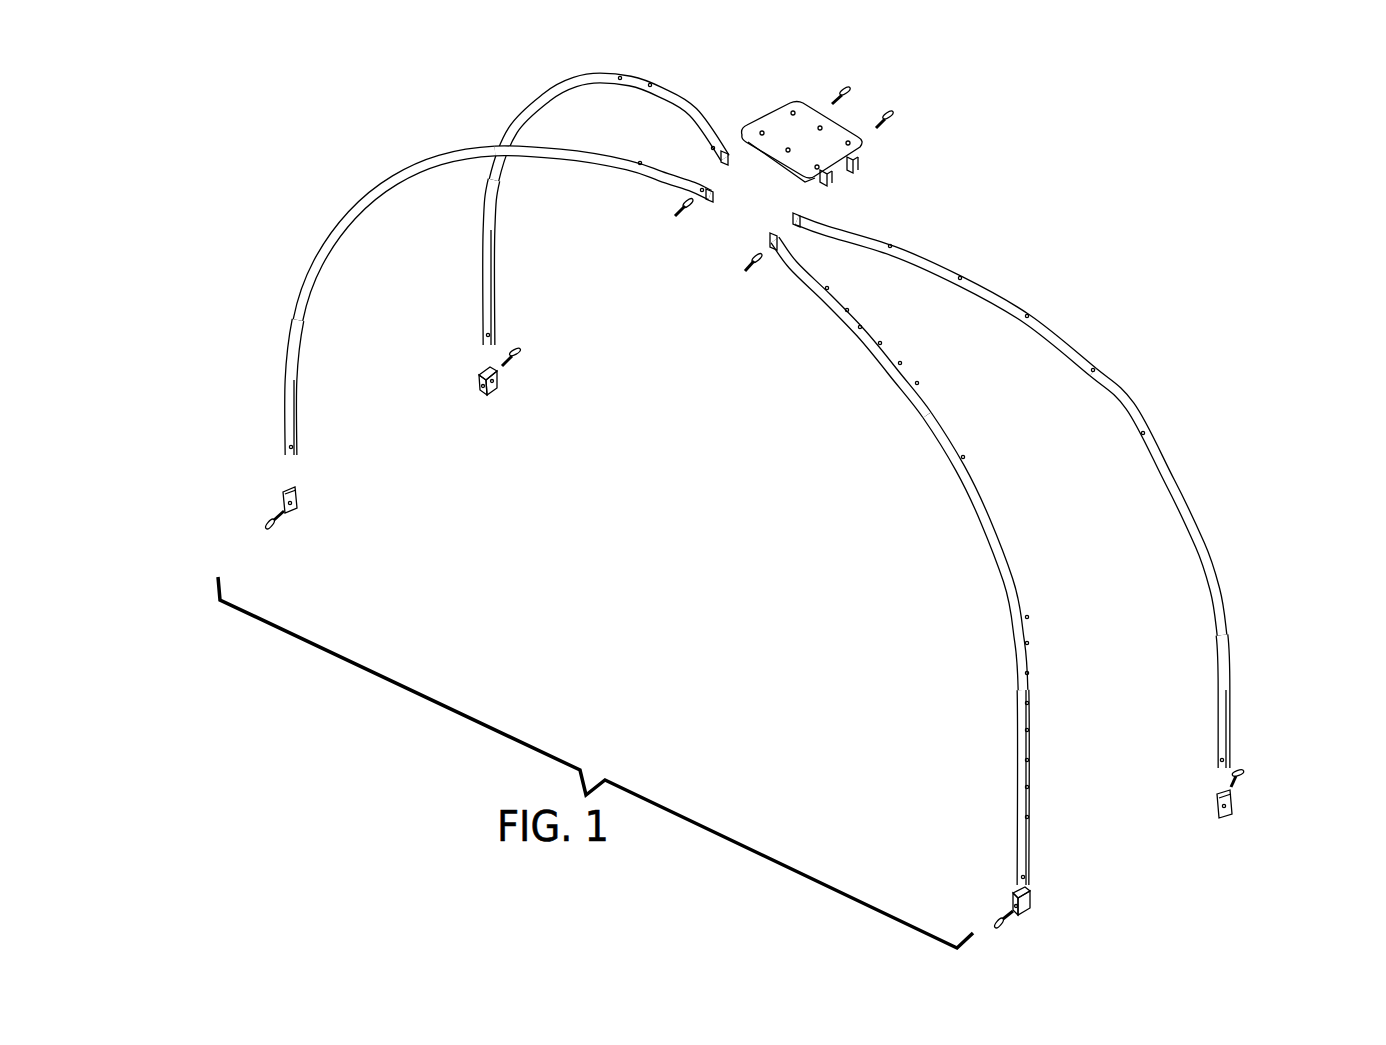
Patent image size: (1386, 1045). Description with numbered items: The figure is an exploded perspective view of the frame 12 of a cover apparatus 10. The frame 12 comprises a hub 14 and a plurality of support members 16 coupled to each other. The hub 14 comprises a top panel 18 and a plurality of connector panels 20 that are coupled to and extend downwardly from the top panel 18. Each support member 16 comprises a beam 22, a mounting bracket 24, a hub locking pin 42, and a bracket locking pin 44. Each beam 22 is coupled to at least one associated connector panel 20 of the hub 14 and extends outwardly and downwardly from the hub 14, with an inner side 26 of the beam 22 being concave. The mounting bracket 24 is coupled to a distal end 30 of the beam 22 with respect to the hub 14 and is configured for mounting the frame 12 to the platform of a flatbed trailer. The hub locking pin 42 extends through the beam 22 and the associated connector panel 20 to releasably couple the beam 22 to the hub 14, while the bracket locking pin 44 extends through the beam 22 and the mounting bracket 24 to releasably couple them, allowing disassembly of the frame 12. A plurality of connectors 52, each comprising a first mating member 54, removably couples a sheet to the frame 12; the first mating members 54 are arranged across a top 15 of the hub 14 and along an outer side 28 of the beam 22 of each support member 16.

The cover apparatus 10 is at (1188, 140).
The frame 12 is at (1182, 301).
The hub 14 is at (839, 125).
The top 15 is at (835, 130).
The support member 16 is at (484, 78).
The top panel 18 is at (785, 155).
The connector panel 20 is at (858, 162).
The beam 22 is at (485, 237).
The mounting bracket 24 is at (480, 390).
The inner side 26 is at (774, 362).
The outer side 28 is at (590, 77).
The distal end 30 is at (485, 343).
The hub locking pin 42 is at (848, 90).
The bracket locking pin 44 is at (520, 350).
The connector 52 is at (692, 64).
The first mating member 54 is at (675, 106).